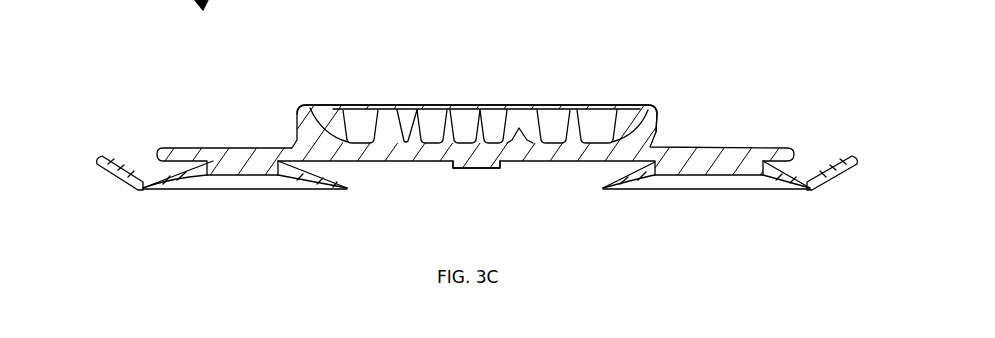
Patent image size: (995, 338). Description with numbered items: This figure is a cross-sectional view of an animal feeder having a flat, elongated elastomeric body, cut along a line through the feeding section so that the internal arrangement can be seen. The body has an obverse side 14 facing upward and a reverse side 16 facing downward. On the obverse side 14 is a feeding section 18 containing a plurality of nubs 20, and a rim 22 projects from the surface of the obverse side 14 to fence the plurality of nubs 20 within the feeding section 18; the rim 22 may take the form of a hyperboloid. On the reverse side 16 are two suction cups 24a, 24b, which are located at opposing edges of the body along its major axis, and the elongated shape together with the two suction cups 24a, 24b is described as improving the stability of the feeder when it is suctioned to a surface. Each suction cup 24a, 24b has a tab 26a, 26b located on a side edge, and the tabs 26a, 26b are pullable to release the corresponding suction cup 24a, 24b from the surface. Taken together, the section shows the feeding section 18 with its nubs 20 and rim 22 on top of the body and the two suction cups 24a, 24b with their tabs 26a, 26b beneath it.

The obverse side 14 is at (237, 148).
The reverse side 16 is at (403, 164).
The feeding section 18 is at (528, 88).
The nubs 20 is at (400, 108).
The rim 22 is at (657, 120).
The suction cup 24a is at (253, 193).
The suction cup 24b is at (703, 193).
The tab 26a is at (103, 153).
The tab 26b is at (842, 158).